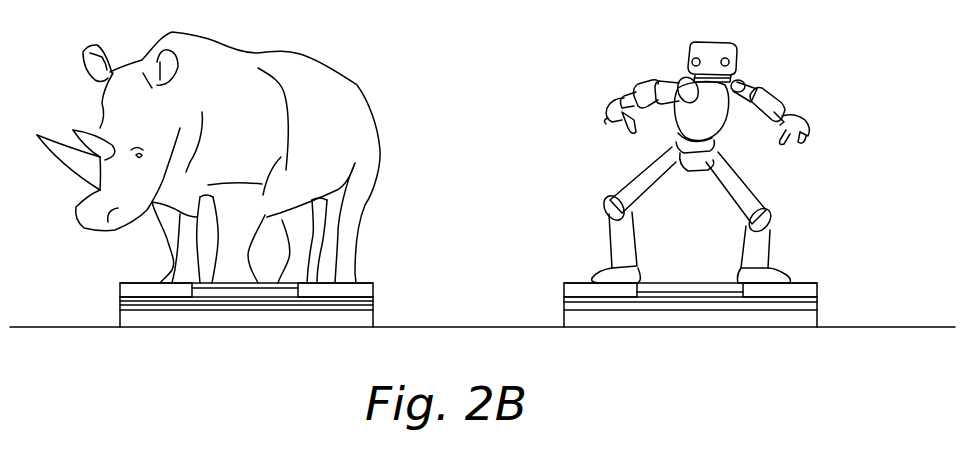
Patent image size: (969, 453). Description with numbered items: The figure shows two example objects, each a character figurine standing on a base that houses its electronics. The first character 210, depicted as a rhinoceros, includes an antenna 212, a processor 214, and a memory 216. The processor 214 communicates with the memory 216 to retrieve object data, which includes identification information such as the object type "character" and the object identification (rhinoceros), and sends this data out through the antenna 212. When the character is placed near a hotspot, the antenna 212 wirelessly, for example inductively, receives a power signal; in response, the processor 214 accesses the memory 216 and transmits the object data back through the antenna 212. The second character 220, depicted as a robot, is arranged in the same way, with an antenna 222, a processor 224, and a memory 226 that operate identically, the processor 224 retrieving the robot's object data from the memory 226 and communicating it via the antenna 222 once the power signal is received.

The character 210 is at (355, 82).
The antenna 212 is at (255, 303).
The processor 214 is at (128, 289).
The memory 216 is at (367, 291).
The character 220 is at (723, 42).
The antenna 222 is at (700, 303).
The processor 224 is at (573, 291).
The memory 226 is at (813, 290).